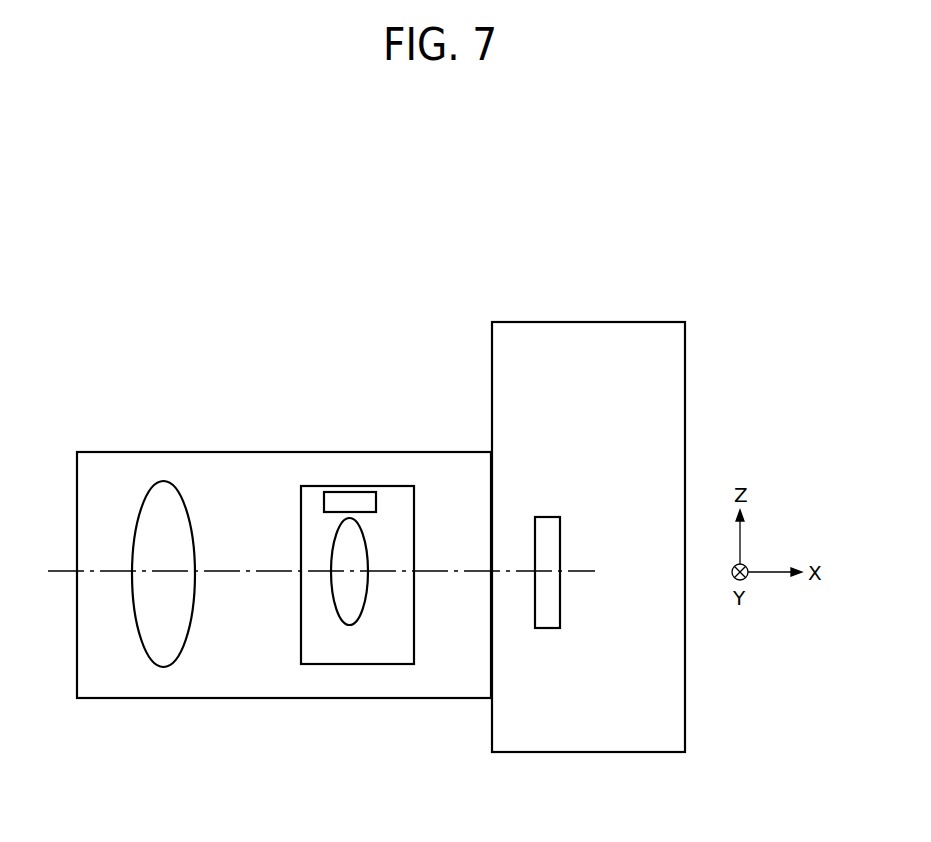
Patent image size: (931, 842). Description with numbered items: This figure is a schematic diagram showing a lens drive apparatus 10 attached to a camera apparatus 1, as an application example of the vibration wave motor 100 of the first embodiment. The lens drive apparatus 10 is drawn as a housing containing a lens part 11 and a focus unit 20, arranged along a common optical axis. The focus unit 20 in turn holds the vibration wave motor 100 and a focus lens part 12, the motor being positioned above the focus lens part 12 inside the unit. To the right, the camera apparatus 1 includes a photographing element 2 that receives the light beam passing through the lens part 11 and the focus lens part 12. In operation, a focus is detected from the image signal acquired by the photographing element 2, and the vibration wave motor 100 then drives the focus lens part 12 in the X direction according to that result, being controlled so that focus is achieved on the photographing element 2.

The camera apparatus 1 is at (629, 332).
The photographing element 2 is at (547, 617).
The lens drive apparatus 10 is at (112, 466).
The lens part 11 is at (171, 643).
The focus lens part 12 is at (351, 611).
The focus unit 20 is at (309, 500).
The vibration wave motor 100 is at (356, 502).